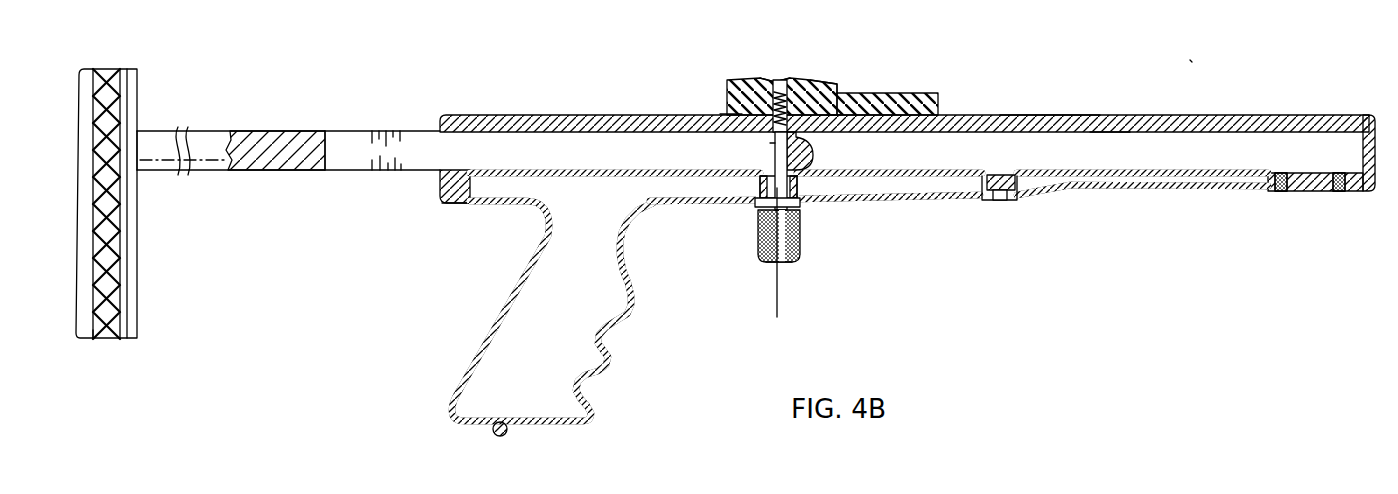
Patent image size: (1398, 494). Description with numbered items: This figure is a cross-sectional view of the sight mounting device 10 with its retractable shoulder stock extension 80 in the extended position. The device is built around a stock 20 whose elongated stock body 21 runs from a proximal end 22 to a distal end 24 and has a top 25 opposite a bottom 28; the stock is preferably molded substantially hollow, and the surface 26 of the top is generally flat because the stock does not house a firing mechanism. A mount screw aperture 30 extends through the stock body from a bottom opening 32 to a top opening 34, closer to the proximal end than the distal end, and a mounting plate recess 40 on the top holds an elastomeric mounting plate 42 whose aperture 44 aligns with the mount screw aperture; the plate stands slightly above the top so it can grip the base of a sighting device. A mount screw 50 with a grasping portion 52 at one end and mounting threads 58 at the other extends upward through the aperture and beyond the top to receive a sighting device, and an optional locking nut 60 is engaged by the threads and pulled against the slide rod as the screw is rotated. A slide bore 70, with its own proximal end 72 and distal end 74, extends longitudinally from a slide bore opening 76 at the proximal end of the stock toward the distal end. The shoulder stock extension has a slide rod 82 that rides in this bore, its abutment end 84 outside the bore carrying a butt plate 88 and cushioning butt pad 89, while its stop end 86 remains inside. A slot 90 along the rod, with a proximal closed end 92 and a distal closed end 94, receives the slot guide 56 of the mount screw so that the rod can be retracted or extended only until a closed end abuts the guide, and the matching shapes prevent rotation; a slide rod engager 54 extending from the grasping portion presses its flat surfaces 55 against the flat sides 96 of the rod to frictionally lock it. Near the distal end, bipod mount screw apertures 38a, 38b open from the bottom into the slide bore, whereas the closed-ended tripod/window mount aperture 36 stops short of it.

The sight mounting device 10 is at (1195, 93).
The stock 20 is at (1145, 192).
The stock body 21 is at (985, 200).
The proximal end 22 is at (437, 201).
The distal end 24 is at (1375, 145).
The top 25 is at (1105, 113).
The surface 26 is at (890, 115).
The bottom 28 is at (891, 203).
The mount screw aperture 30 is at (760, 182).
The bottom opening 32 is at (807, 208).
The top opening 34 is at (800, 113).
The tripod/window mount aperture 36 is at (1002, 200).
The bipod mount screw aperture 38a is at (1280, 192).
The bipod mount screw aperture 38b is at (1340, 192).
The mounting plate recess 40 is at (720, 114).
The mounting plate 42 is at (738, 80).
The aperture 44 is at (762, 80).
The mount screw 50 is at (788, 272).
The grasping portion 52 is at (802, 248).
The slide rod engager 54 is at (763, 263).
The flat surfaces 55 is at (760, 262).
The slot guide 56 is at (772, 143).
The mounting threads 58 is at (781, 88).
The locking nut 60 is at (767, 140).
The slide bore 70 is at (1045, 135).
The proximal end 72 is at (452, 116).
The distal end 74 is at (1328, 133).
The slide bore opening 76 is at (432, 170).
The retractable shoulder stock extension 80 is at (166, 108).
The slide rod 82 is at (208, 130).
The abutment end 84 is at (140, 171).
The stop end 86 is at (813, 152).
The butt plate 88 is at (135, 338).
The butt pad 89 is at (95, 338).
The slot 90 is at (403, 143).
The proximal closed end 92 is at (332, 147).
The distal closed end 94 is at (827, 115).
The sides 96 is at (352, 170).